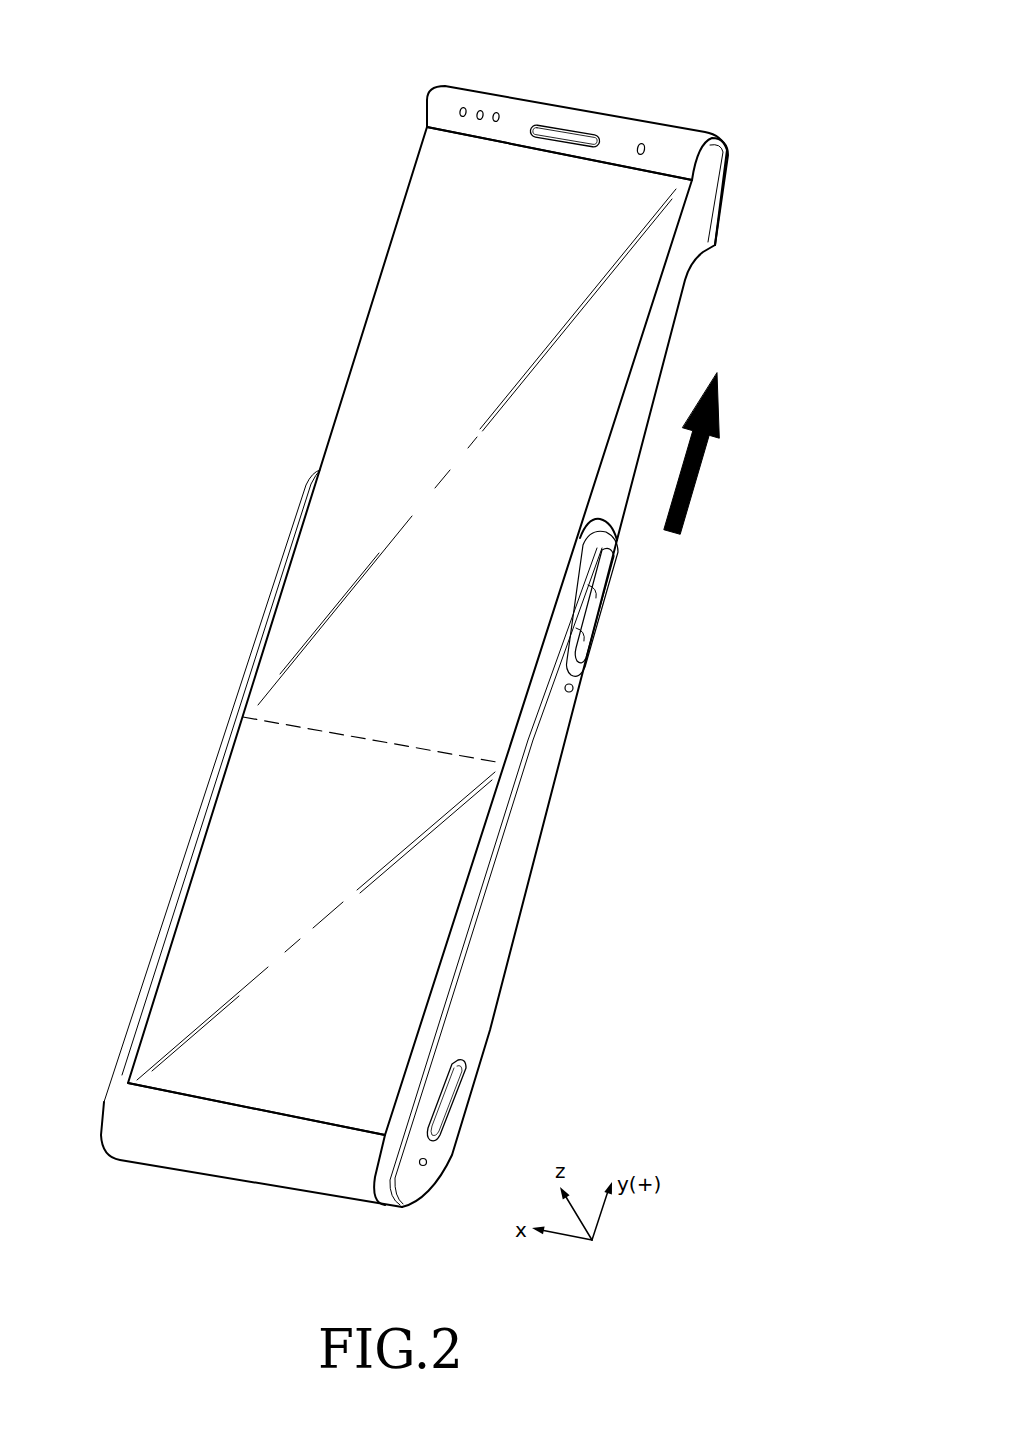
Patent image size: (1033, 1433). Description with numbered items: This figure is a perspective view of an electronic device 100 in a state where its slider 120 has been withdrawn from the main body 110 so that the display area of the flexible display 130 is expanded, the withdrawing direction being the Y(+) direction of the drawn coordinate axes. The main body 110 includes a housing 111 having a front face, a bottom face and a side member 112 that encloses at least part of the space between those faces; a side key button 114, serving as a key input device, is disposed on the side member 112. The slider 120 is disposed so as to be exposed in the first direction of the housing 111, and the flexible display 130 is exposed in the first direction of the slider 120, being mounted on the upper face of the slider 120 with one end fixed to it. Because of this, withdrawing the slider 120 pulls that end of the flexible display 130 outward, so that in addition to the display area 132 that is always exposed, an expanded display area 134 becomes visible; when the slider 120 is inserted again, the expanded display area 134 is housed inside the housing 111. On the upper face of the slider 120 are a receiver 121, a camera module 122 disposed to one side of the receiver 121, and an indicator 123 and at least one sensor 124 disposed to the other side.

The electronic device 100 is at (644, 758).
The main body 110 is at (520, 1009).
The housing 111 is at (218, 1152).
The side member 112 is at (527, 834).
The side key button 114 is at (590, 607).
The slider 120 is at (737, 241).
The receiver 121 is at (564, 127).
The camera module 122 is at (641, 143).
The indicator 123 is at (498, 110).
The sensor 124 is at (480, 110).
The flexible display 130 is at (364, 459).
The display area 132 is at (420, 272).
The expanded display area 134 is at (236, 862).